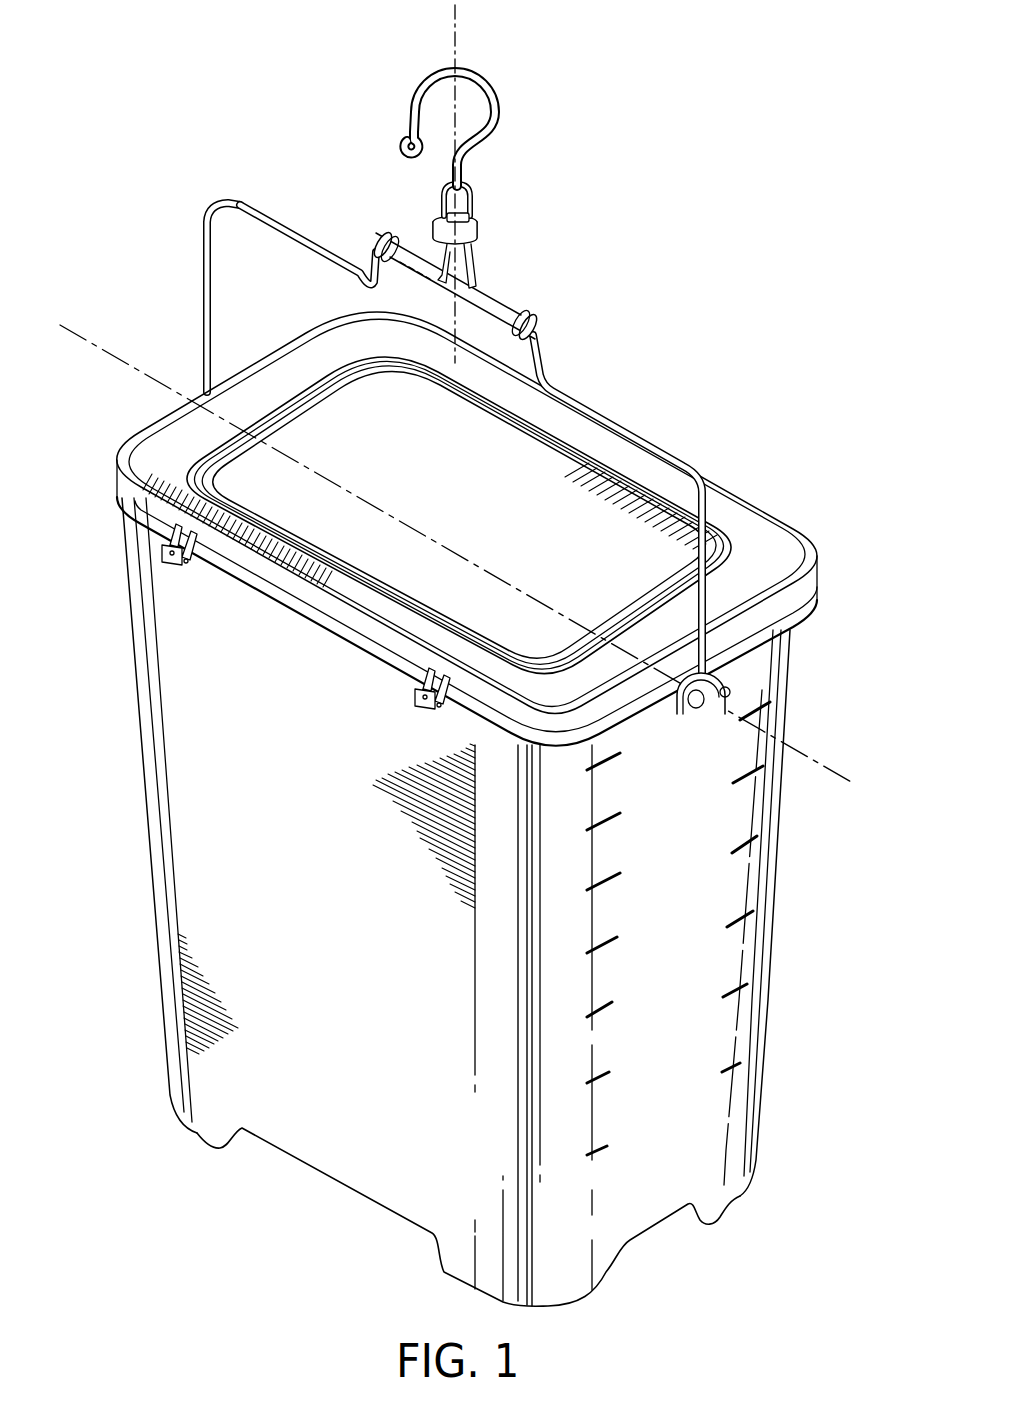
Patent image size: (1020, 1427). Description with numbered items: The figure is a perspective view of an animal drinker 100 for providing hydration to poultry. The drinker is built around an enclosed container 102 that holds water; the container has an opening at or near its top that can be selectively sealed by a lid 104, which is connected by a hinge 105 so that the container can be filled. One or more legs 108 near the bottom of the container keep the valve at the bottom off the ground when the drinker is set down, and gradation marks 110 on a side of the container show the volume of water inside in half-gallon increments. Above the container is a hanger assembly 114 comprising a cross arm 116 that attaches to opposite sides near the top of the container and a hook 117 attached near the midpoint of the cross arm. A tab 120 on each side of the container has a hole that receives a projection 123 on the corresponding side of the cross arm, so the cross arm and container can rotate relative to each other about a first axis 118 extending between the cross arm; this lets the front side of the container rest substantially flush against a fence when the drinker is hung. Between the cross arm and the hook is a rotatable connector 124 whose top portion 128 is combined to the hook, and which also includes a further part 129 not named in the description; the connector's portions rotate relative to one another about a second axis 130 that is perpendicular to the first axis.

The animal drinker 100 is at (475, 668).
The enclosed container 102 is at (506, 915).
The lid 104 is at (448, 529).
The hinge 105 is at (203, 600).
The legs 108 is at (207, 1138).
The gradation marks 110 is at (750, 777).
The hanger assembly 114 is at (471, 351).
The cross arm 116 is at (612, 421).
The hook 117 is at (473, 72).
The first axis 118 is at (130, 367).
The tab 120 is at (686, 707).
The projection 123 is at (724, 690).
The rotatable connector 124 is at (543, 229).
The top portion 128 is at (472, 221).
The swivel ring 129 is at (477, 237).
The second axis 130 is at (457, 30).